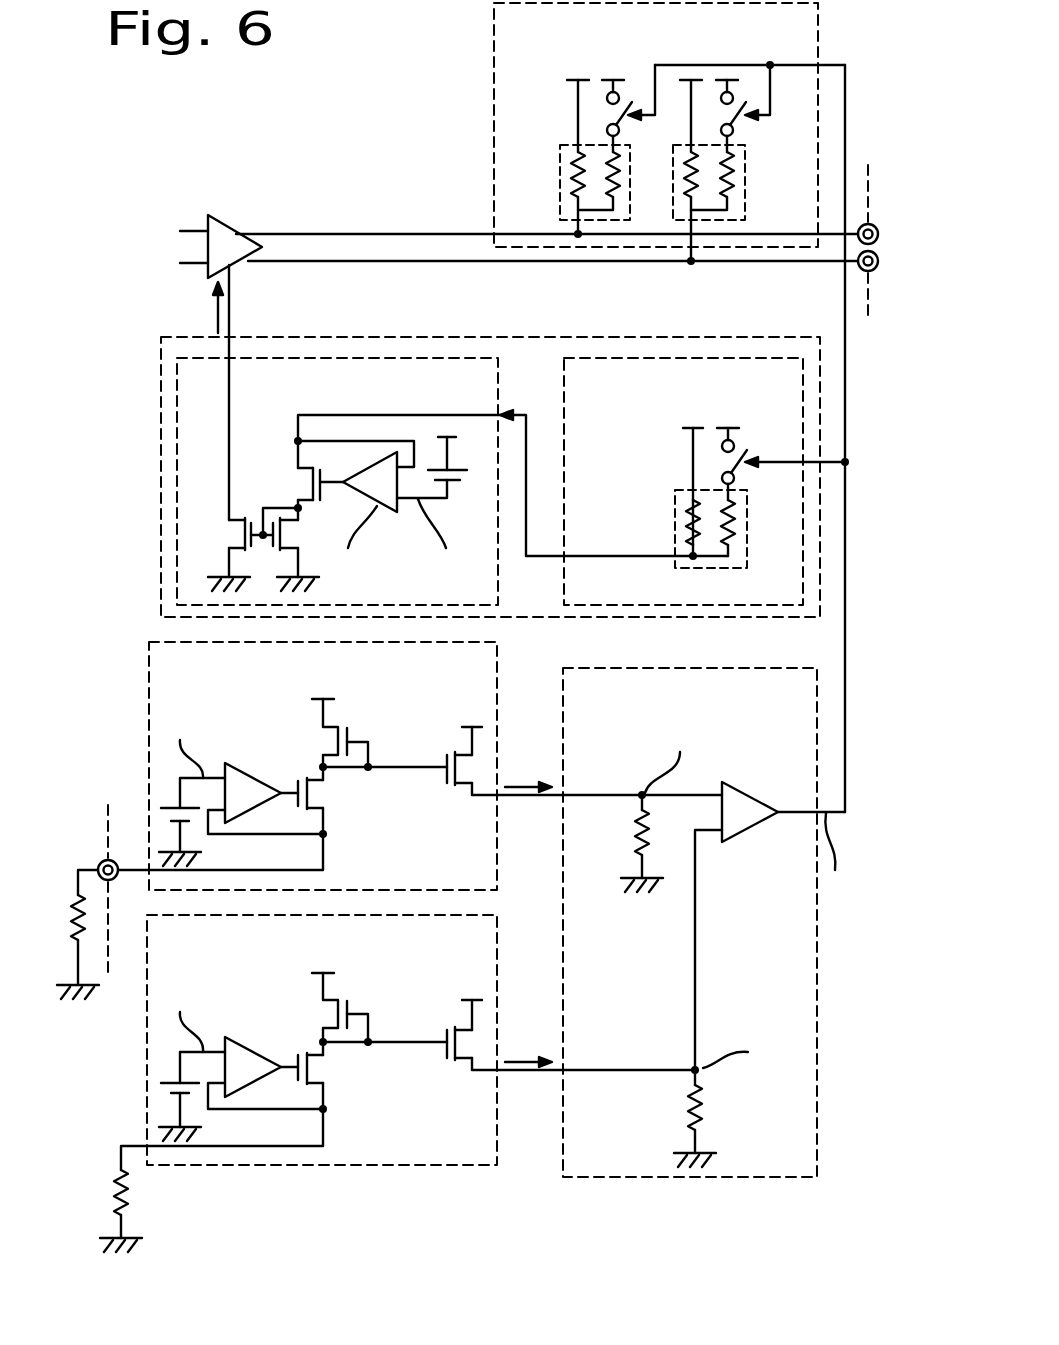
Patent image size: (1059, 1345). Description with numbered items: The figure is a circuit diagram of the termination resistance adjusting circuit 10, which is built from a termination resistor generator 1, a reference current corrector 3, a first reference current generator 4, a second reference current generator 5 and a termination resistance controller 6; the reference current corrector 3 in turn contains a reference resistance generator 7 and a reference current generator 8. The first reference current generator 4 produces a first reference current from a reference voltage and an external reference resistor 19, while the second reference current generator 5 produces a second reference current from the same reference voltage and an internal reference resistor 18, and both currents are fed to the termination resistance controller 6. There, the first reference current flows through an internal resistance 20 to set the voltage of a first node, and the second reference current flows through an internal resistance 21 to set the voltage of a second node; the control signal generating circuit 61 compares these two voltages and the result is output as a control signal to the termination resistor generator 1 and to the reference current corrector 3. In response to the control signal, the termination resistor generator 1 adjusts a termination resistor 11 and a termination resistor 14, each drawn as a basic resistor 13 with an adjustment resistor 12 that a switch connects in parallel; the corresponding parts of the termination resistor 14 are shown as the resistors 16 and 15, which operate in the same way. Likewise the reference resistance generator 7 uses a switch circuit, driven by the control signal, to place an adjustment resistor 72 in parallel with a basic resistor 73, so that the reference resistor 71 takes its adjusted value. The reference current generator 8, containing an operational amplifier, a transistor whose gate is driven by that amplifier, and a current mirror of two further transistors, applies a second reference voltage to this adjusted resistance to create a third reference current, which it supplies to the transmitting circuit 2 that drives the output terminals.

The termination resistor generator 1 is at (631, 134).
The transmitting circuit 2 is at (230, 226).
The reference current corrector 3 is at (467, 450).
The first reference current generator 4 is at (149, 712).
The second reference current generator 5 is at (147, 1072).
The termination resistance controller 6 is at (728, 929).
The reference resistance generator 7 is at (706, 444).
The reference current generator 8 is at (303, 357).
The termination resistance adjusting circuit 10 is at (473, 627).
The termination resistor 11 is at (727, 172).
The adjustment resistor 12 is at (740, 178).
The basic resistor 13 is at (691, 178).
The termination resistor 14 is at (584, 159).
The termination resistor 15 is at (628, 168).
The termination resistor 16 is at (578, 178).
The internal reference resistor 18 is at (119, 1178).
The external reference resistor 19 is at (78, 892).
The internal resistance 20 is at (628, 835).
The internal resistance 21 is at (685, 1107).
The control signal generating circuit 61 is at (745, 782).
The reference resistor 71 is at (675, 508).
The adjustment resistor 72 is at (740, 526).
The basic resistor 73 is at (690, 534).